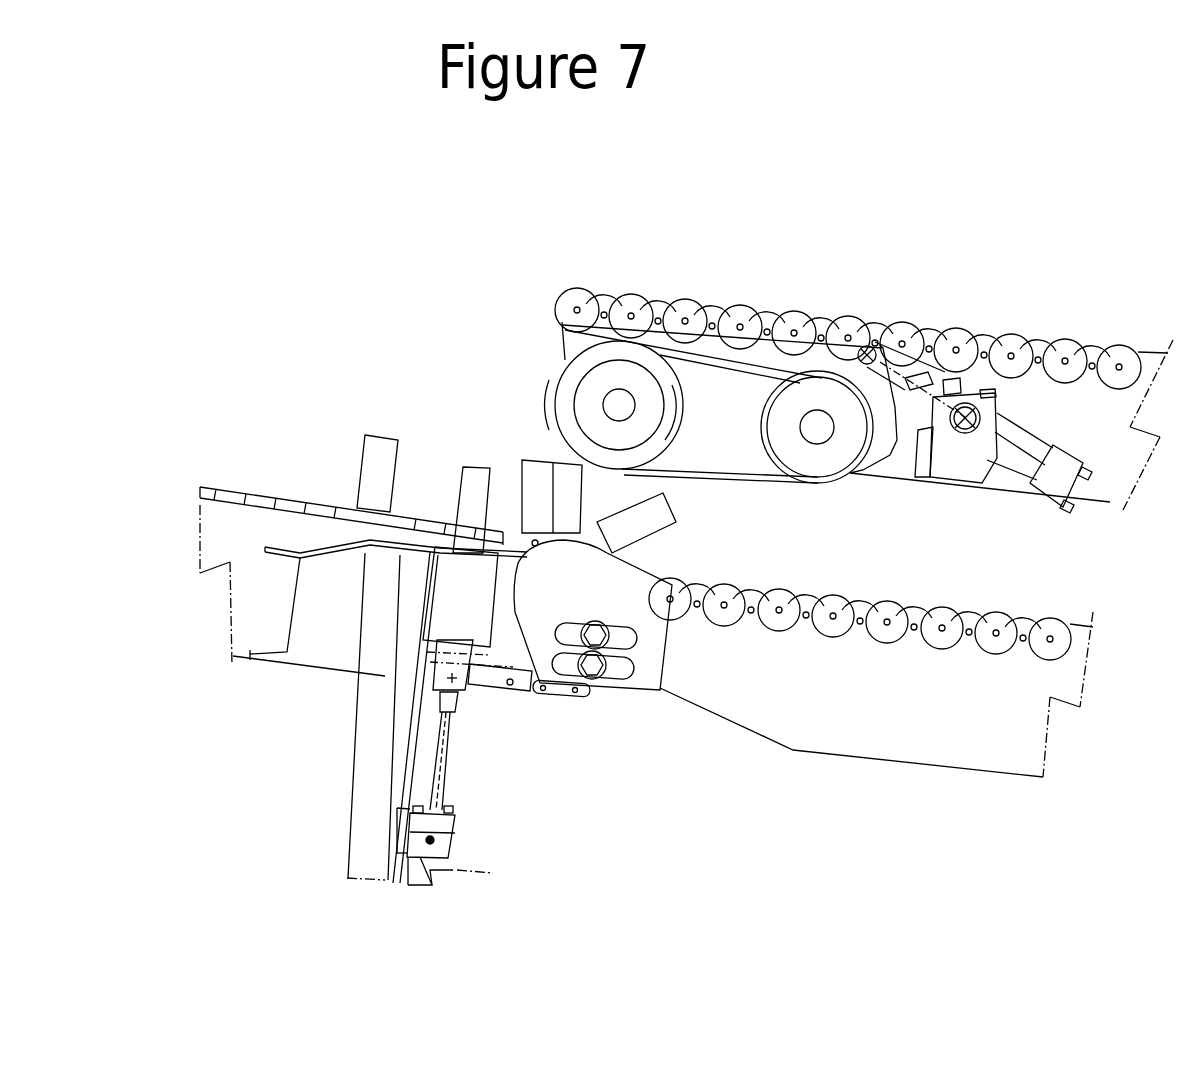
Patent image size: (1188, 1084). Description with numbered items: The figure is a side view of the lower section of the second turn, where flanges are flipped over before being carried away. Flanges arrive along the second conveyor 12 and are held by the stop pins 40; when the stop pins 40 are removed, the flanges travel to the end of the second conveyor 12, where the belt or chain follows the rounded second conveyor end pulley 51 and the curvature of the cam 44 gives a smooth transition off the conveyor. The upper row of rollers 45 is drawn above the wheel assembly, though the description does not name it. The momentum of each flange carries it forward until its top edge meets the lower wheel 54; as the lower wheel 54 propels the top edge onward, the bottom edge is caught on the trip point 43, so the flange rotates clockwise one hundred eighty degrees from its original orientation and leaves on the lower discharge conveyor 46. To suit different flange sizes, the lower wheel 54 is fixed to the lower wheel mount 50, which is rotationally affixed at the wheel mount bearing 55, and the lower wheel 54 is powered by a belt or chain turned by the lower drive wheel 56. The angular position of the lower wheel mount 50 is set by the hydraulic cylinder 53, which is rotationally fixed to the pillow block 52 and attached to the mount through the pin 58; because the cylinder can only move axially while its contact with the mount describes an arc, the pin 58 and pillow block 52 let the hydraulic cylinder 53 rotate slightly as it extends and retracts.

The second conveyor 12 is at (252, 497).
The stop pins 40 is at (463, 467).
The trip point 43 is at (613, 553).
The cam 44 is at (518, 613).
The upper roller conveyor 45 is at (712, 297).
The lower discharge conveyor 46 is at (907, 603).
The lower wheel mount 50 is at (742, 472).
The second conveyor end pulley 51 is at (585, 688).
The pillow block 52 is at (993, 402).
The hydraulic cylinder 53 is at (905, 385).
The lower wheel 54 is at (558, 380).
The wheel mount bearing 55 is at (822, 440).
The lower drive wheel 56 is at (778, 455).
The pin 58 is at (869, 346).